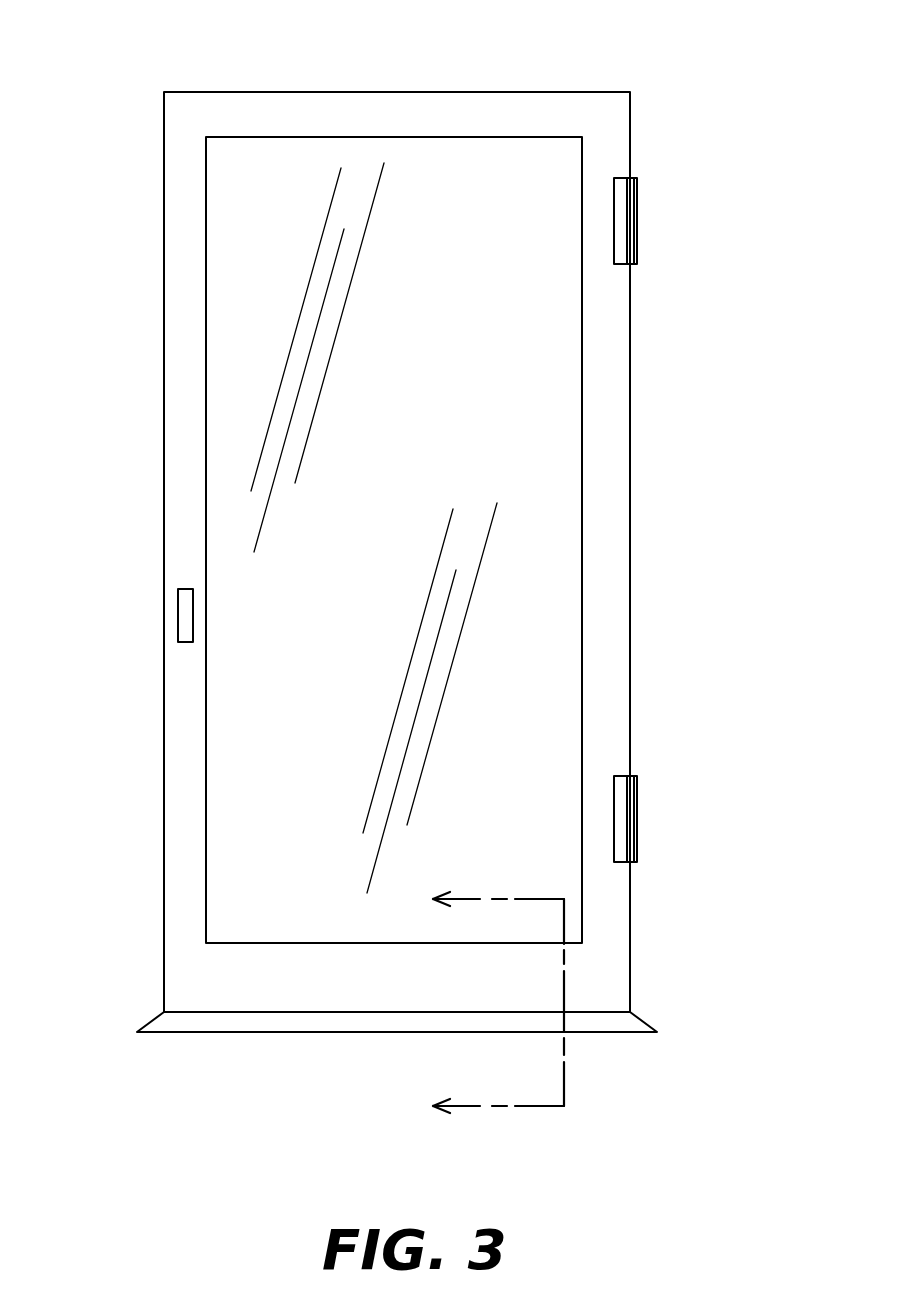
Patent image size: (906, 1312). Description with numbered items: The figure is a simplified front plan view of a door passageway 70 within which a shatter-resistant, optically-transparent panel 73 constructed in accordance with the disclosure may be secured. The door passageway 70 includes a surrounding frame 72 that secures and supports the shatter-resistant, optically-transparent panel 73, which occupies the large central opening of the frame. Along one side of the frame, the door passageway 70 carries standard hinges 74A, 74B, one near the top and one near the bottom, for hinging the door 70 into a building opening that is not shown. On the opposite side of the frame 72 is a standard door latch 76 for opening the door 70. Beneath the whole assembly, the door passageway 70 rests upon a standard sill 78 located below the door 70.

The door passageway 70 is at (411, 570).
The surrounding frame 72 is at (164, 130).
The shatter-resistant, optically-transparent panel 73 is at (544, 453).
The hinge 74A is at (637, 190).
The hinge 74B is at (637, 777).
The door latch 76 is at (178, 592).
The sill 78 is at (294, 1033).